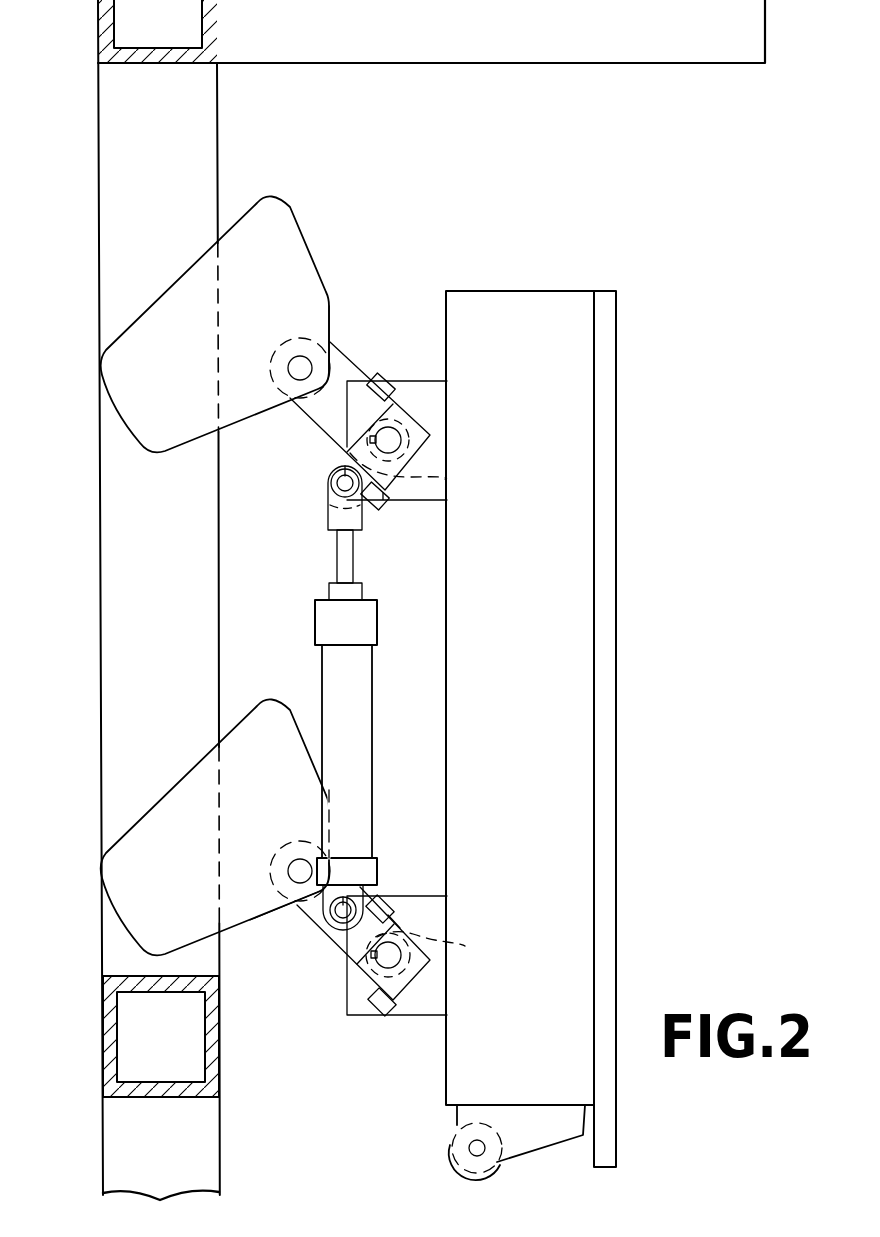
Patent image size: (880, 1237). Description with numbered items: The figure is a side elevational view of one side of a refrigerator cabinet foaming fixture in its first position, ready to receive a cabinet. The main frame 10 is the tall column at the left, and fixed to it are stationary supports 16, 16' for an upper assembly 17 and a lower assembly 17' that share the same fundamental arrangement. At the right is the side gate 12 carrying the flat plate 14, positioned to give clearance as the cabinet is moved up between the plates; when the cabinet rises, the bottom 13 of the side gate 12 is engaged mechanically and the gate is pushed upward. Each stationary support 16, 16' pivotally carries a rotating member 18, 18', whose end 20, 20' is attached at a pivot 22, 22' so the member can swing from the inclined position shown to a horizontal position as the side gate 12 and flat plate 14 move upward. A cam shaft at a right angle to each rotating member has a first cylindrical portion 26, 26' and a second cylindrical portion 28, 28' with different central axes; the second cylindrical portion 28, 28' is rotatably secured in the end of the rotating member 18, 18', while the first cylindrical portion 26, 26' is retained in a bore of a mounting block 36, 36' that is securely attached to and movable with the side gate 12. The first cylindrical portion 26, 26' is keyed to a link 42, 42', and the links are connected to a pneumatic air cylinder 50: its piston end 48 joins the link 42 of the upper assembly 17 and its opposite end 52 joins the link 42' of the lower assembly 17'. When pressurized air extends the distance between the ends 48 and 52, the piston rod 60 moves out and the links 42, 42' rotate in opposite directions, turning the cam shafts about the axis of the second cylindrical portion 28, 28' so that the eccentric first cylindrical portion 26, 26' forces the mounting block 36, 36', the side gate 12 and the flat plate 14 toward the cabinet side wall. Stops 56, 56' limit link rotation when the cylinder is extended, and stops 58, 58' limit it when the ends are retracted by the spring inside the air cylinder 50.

The main frame 10 is at (110, 492).
The side gate 12 is at (586, 668).
The bottom of the side gate 13 is at (455, 1126).
The flat plate 14 is at (617, 456).
The stationary support 16 is at (218, 314).
The stationary support 16' is at (215, 806).
The upper assembly 17 is at (270, 433).
The lower assembly 17' is at (294, 973).
The rotating member 18 is at (360, 398).
The rotating member 18' is at (338, 943).
The end of the rotating member 20 is at (348, 327).
The end of the rotating member 20' is at (271, 905).
The pivot 22 is at (279, 363).
The pivot 22' is at (284, 859).
The first cylindrical portion 26 is at (426, 440).
The first cylindrical portion 26' is at (432, 955).
The second cylindrical portion 28 is at (418, 472).
The second cylindrical portion 28' is at (439, 941).
The mounting block 36 is at (421, 434).
The mounting block 36' is at (431, 955).
The link 42 is at (318, 474).
The link 42' is at (335, 951).
The piston end of the air cylinder 48 is at (328, 513).
The pneumatic air cylinder 50 is at (372, 697).
The opposite end of the air cylinder 52 is at (398, 924).
The stop 56 is at (392, 512).
The stop 56' is at (376, 1025).
The stop 58 is at (395, 372).
The stop 58' is at (401, 892).
The piston rod 60 is at (338, 563).